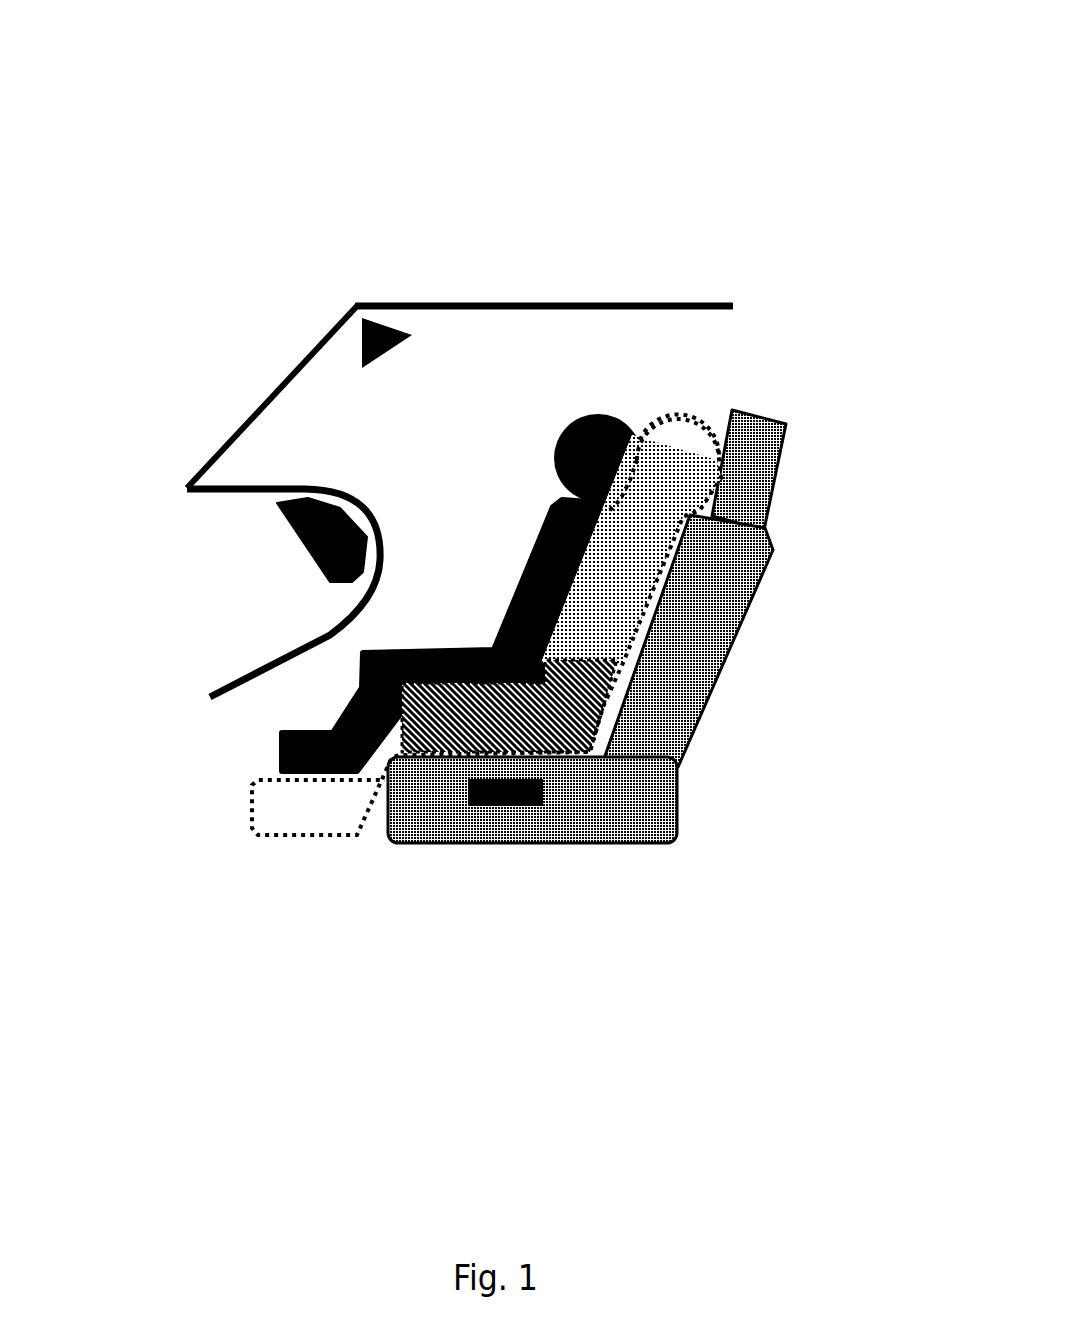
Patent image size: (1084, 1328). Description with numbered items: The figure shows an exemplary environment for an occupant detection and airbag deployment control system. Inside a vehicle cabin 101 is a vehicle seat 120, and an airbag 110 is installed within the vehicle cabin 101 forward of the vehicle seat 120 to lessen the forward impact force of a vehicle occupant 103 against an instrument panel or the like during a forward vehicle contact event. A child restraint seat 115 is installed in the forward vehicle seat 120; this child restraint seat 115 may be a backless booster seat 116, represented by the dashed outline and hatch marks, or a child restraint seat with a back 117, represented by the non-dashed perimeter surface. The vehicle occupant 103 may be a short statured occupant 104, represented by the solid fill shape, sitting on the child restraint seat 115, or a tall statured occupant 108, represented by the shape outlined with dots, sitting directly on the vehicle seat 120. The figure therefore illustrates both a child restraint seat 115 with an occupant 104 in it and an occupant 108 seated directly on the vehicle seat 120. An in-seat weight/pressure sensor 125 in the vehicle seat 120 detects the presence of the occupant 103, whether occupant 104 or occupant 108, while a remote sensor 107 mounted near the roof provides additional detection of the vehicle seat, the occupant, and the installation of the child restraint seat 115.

The vehicle cabin 101 is at (592, 283).
The vehicle occupant 103 is at (607, 550).
The short statured occupant 104 is at (532, 543).
The remote sensor 107 is at (357, 302).
The tall statured occupant 108 is at (685, 430).
The airbag 110 is at (303, 553).
The child restraint seat 115 is at (523, 740).
The backless booster seat 116 is at (597, 663).
The child restraint seat with a back 117 is at (690, 513).
The vehicle seat 120 is at (705, 723).
The in-seat weight/pressure sensor 125 is at (533, 817).